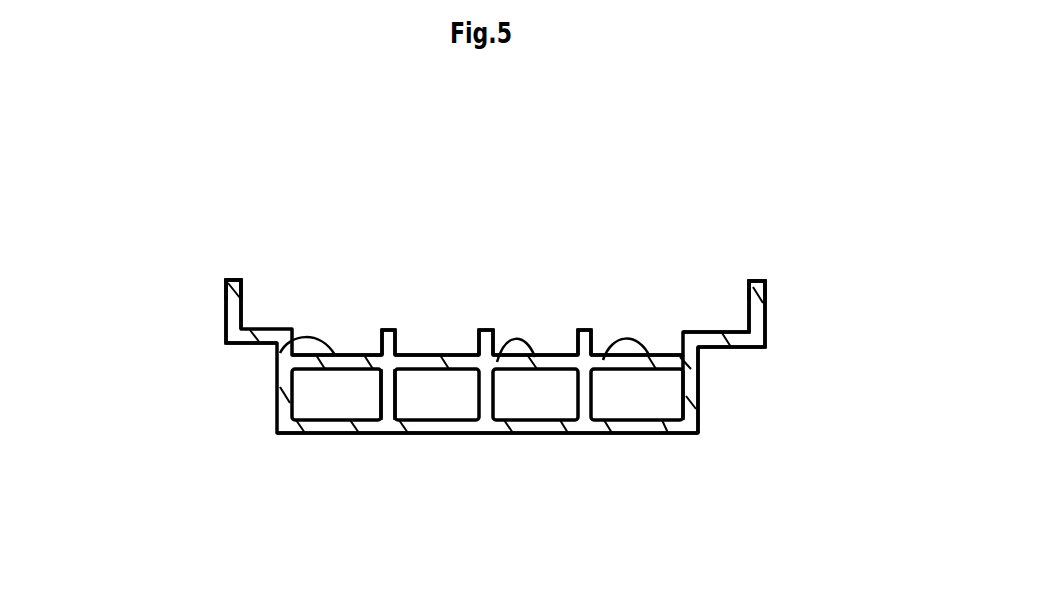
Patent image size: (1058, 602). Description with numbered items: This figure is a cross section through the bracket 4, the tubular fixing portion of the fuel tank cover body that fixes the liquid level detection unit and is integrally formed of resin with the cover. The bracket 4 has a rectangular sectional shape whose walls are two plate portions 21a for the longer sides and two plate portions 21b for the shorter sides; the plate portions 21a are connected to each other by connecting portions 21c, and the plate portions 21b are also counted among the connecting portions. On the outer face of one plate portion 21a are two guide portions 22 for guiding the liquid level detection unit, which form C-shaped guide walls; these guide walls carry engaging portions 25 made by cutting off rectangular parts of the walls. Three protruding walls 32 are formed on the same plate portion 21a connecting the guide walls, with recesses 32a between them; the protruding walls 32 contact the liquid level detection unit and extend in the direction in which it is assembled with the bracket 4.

The bracket 4 is at (648, 428).
The guide portions 22 is at (214, 277).
The engaging portions 25 is at (238, 281).
The plate portions for the longer sides 21a is at (348, 352).
The plate portions for the shorter sides 21b is at (695, 402).
The connecting portions 21c is at (387, 403).
The protruding walls 32 is at (383, 335).
The recesses 32a is at (280, 353).